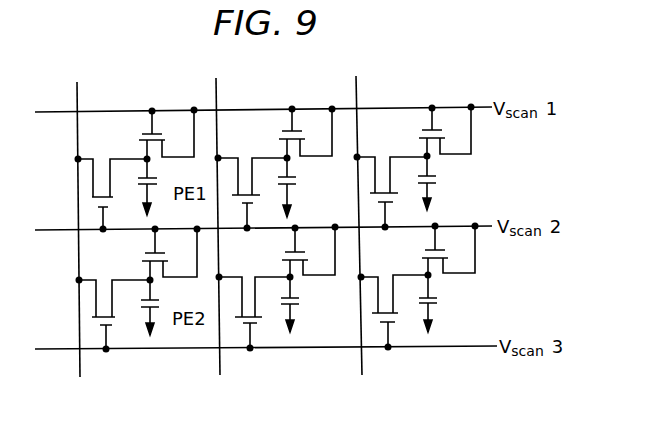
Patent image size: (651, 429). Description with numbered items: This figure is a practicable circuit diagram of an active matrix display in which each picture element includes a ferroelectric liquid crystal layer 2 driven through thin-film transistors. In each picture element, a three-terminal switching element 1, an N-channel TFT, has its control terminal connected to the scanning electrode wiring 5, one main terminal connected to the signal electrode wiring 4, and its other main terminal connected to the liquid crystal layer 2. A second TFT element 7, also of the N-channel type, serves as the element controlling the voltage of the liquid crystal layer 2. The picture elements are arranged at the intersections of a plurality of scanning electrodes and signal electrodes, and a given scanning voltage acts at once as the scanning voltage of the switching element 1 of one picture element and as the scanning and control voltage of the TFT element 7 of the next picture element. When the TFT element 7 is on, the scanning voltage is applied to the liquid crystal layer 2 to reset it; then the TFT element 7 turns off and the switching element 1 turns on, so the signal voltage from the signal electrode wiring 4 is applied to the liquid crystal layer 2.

The three-terminal switching element 1 is at (113, 207).
The ferroelectric liquid crystal layer 2 is at (143, 176).
The signal electrode wiring 4 is at (77, 90).
The scanning electrode wiring 5 is at (109, 111).
The TFT element 7 is at (155, 133).